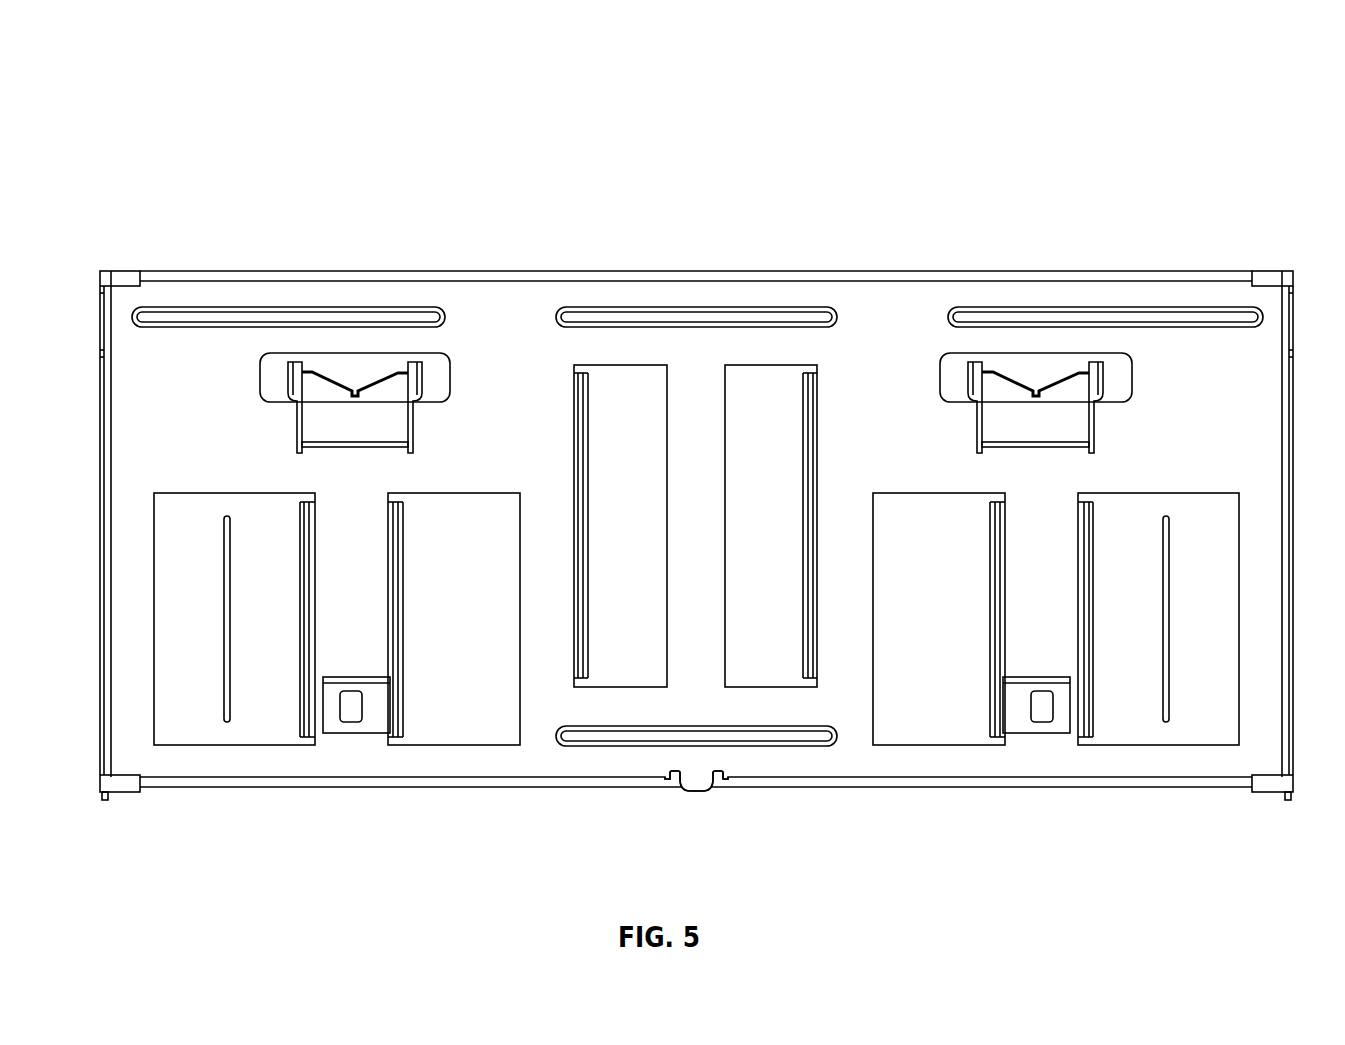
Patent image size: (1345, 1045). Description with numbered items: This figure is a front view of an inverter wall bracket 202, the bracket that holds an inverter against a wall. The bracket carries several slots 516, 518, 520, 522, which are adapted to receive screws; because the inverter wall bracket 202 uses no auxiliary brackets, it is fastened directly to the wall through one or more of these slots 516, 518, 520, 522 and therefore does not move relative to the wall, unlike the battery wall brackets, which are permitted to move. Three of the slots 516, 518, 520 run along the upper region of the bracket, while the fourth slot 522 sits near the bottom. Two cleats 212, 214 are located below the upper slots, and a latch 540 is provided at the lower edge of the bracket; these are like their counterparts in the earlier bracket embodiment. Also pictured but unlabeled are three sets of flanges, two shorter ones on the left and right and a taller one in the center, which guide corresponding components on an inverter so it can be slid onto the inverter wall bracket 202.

The inverter wall bracket 202 is at (1237, 86).
The cleat 212 is at (330, 392).
The cleat 214 is at (1020, 403).
The slot 516 is at (181, 317).
The slot 518 is at (755, 222).
The slot 520 is at (1135, 317).
The slot 522 is at (583, 746).
The latch 540 is at (787, 877).